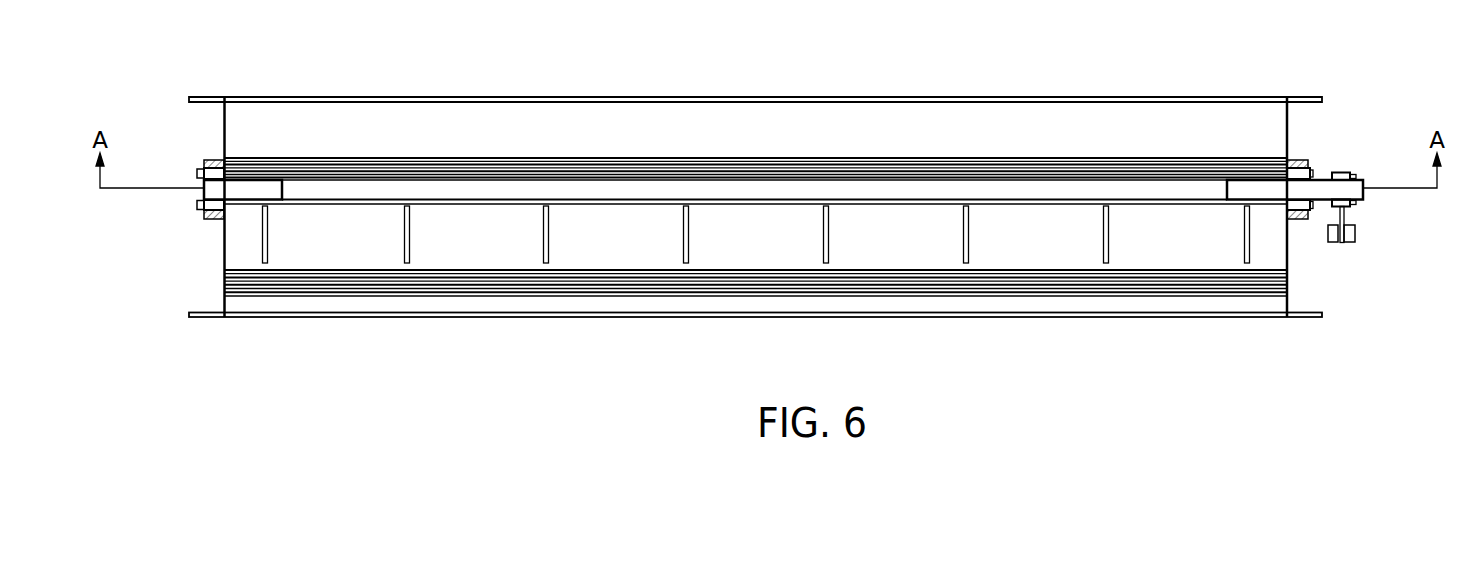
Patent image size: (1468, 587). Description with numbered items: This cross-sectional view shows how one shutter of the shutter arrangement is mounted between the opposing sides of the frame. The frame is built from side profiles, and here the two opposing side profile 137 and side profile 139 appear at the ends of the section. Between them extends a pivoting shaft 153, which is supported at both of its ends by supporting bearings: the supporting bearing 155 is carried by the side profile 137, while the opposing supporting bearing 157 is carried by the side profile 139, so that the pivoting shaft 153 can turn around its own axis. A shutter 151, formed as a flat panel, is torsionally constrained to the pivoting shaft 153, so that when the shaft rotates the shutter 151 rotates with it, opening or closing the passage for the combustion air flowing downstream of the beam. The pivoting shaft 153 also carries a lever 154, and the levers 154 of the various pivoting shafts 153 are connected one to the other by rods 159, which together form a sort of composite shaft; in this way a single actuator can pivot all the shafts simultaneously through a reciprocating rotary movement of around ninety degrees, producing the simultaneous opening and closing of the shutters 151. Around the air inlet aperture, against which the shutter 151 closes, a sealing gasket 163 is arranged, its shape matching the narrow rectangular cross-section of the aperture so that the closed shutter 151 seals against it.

The side profile 137 is at (192, 112).
The side profile 139 is at (1310, 99).
The shutter 151 is at (900, 253).
The pivoting shaft 153 is at (258, 192).
The lever 154 is at (1348, 212).
The supporting bearing 155 is at (204, 160).
The supporting bearing 157 is at (1302, 160).
The rod 159 is at (1337, 243).
The sealing gasket 163 is at (1138, 287).